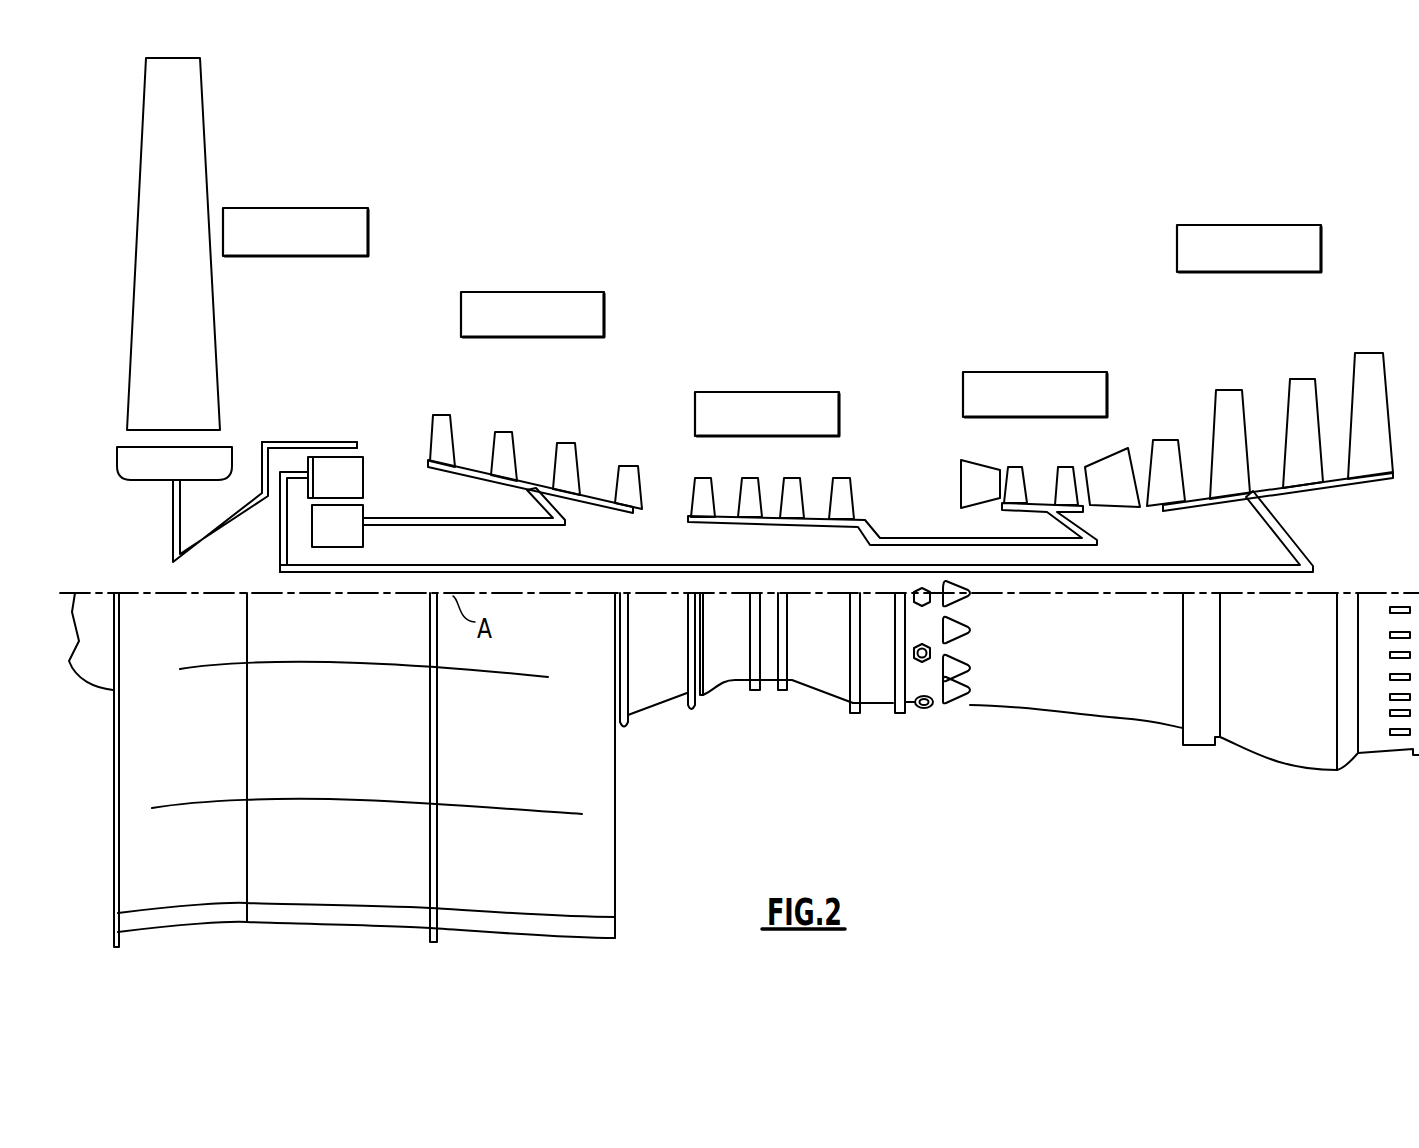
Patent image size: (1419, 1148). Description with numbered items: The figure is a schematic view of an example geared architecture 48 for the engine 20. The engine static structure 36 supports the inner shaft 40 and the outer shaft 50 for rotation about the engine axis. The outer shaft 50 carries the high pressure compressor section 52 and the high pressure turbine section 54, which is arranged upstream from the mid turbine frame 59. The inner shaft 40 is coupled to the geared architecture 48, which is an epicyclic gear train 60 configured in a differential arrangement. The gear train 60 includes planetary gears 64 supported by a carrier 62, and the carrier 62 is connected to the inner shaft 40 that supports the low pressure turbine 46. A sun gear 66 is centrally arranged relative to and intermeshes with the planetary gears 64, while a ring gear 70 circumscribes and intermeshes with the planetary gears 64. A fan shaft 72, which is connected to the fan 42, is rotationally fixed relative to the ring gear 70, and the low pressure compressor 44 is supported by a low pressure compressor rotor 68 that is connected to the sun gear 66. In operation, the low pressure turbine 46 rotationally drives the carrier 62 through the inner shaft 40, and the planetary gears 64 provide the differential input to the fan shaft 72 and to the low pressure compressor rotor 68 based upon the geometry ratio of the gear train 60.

The engine 20 is at (848, 206).
The engine static structure 36 is at (963, 448).
The inner shaft 40 is at (578, 572).
The fan 42 is at (200, 140).
The low pressure compressor 44 is at (424, 413).
The low pressure turbine 46 is at (1140, 320).
The geared architecture 48 is at (390, 402).
The outer shaft 50 is at (911, 538).
The high pressure compressor section 52 is at (683, 385).
The high pressure turbine section 54 is at (1085, 367).
The mid turbine frame 59 is at (1121, 447).
The epicyclic gear train 60 is at (277, 570).
The carrier 62 is at (279, 528).
The planetary gears 64 is at (360, 466).
The sun gear 66 is at (363, 537).
The low pressure compressor rotor 68 is at (405, 517).
The ring gear 70 is at (343, 441).
The fan shaft 72 is at (247, 494).